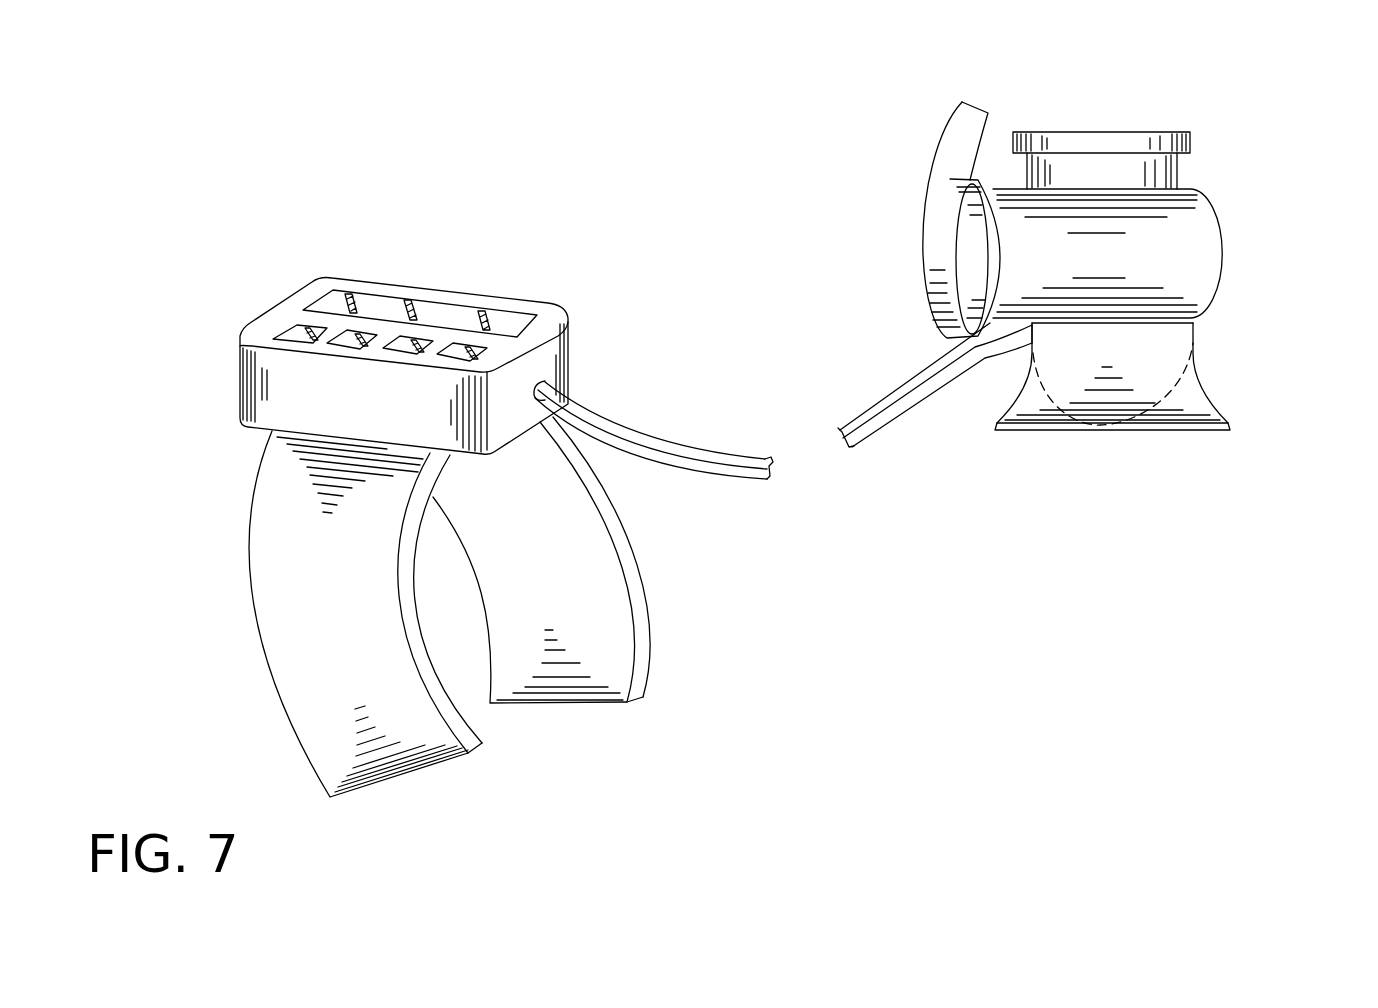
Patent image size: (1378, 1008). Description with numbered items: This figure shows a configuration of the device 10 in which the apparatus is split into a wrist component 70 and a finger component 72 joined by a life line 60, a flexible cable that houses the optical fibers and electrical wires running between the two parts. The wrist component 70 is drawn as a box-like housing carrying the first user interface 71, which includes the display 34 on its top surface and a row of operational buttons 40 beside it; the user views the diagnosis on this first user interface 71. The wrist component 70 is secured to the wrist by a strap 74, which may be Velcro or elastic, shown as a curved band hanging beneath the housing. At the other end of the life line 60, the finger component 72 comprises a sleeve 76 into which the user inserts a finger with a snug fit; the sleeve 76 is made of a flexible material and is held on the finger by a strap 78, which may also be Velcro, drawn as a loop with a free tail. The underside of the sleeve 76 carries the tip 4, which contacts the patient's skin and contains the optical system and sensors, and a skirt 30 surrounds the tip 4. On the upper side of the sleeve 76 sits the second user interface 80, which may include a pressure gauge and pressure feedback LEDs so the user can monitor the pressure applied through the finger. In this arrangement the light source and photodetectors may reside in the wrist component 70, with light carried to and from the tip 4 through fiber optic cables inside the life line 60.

The device 10 is at (357, 147).
The first user interface 71 is at (415, 280).
The display 34 is at (487, 313).
The operational buttons 40 is at (297, 330).
The wrist component 70 is at (226, 458).
The strap 74 is at (381, 781).
The life line 60 is at (767, 478).
The finger component 72 is at (1252, 177).
The sleeve 76 is at (1207, 268).
The second user interface 80 is at (1133, 123).
The strap 78 is at (953, 152).
The tip 4 is at (1165, 357).
The skirt 30 is at (1207, 407).